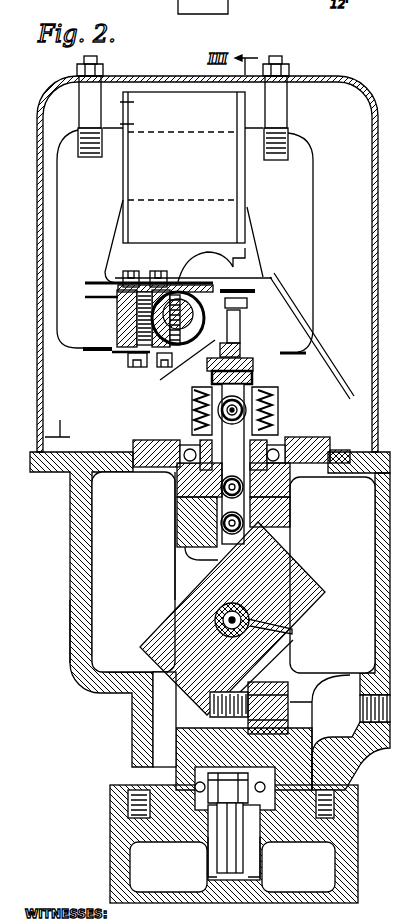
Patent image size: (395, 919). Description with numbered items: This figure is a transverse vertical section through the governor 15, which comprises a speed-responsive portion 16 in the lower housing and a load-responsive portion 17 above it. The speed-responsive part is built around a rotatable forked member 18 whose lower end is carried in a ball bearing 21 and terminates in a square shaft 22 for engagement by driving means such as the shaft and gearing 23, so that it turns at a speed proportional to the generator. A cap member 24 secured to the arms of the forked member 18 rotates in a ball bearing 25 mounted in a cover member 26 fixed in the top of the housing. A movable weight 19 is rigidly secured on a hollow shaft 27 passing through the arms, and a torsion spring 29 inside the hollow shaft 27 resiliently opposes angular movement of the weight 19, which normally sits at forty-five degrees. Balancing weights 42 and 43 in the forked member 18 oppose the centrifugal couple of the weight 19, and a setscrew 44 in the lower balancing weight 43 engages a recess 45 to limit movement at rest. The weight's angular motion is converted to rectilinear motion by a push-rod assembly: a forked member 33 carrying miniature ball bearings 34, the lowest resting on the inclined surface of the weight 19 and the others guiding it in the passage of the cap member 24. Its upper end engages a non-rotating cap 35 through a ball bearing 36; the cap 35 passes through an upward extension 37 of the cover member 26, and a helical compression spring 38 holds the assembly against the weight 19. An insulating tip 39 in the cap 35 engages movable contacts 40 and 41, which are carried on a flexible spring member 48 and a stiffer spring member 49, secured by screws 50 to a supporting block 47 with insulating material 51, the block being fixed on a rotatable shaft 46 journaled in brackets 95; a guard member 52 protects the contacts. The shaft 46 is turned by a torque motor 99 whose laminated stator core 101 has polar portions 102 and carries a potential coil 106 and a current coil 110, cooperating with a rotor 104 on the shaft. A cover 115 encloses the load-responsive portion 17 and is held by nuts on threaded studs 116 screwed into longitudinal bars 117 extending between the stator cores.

The governor 15 is at (58, 538).
The speed-responsive portion 16 is at (122, 536).
The load-responsive portion 17 is at (344, 205).
The forked member 18 is at (175, 582).
The movable mass or weight 19 is at (300, 566).
The ball bearing 21 is at (180, 754).
The square shaft 22 is at (207, 848).
The shaft and gearing 23 is at (258, 885).
The cap member 24 is at (292, 490).
The ball bearing 25 is at (170, 480).
The cover member 26 is at (294, 436).
The hollow shaft 27 is at (294, 630).
The torsion rod or torsion spring 29 is at (292, 636).
The forked member 33 is at (208, 562).
The miniature precision ball bearings 34 is at (232, 464).
The non-rotating cap 35 is at (254, 368).
The ball bearing 36 is at (252, 378).
The upward extension 37 is at (192, 404).
The helical compression spring 38 is at (280, 403).
The tip or push-rod 39 is at (240, 334).
The lower movable contact 40 is at (247, 308).
The upper movable contact 41 is at (248, 293).
The balancing weight 42 is at (177, 520).
The balancing weight 43 is at (288, 692).
The setscrew 44 is at (312, 704).
The recess 45 is at (262, 680).
The rotatable shaft 46 is at (196, 312).
The supporting block 47 is at (117, 308).
The spring member 48 is at (220, 355).
The spring member 49 is at (224, 276).
The screws 50 is at (146, 270).
The insulating material 51 is at (96, 284).
The guard member 52 is at (322, 352).
The brackets 95 is at (104, 428).
The torque motor assembly 99 is at (188, 241).
The laminated stator core assembly 101 is at (314, 160).
The polar portions 102 is at (90, 350).
The laminated rotor member 104 is at (165, 378).
The potential coil 106 is at (126, 102).
The current coil 110 is at (126, 124).
The cover 115 is at (322, 80).
The threaded studs 116 is at (100, 60).
The longitudinal bars 117 is at (78, 130).